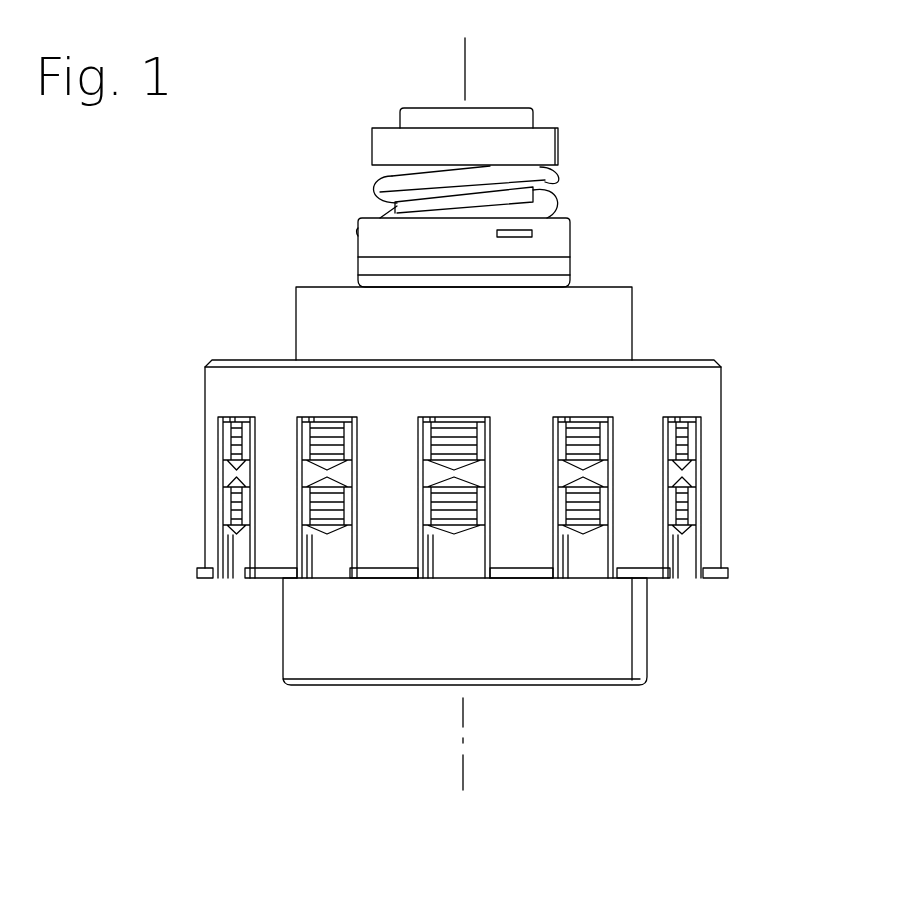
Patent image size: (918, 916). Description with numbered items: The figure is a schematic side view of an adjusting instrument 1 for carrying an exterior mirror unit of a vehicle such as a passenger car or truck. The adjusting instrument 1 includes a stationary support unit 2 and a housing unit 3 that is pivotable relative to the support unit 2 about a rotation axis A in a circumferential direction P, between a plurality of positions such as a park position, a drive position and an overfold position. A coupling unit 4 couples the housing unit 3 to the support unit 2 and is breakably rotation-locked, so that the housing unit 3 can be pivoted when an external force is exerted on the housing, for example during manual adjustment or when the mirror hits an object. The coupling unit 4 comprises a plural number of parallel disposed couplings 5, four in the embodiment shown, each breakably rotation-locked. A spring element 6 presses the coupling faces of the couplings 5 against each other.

The adjusting instrument 1 is at (733, 272).
The support unit 2 is at (635, 638).
The housing unit 3 is at (708, 518).
The coupling unit 4 is at (683, 452).
The couplings 5 is at (330, 545).
The spring element 6 is at (538, 173).
The circumferential direction P is at (512, 348).
The rotation axis A is at (463, 762).